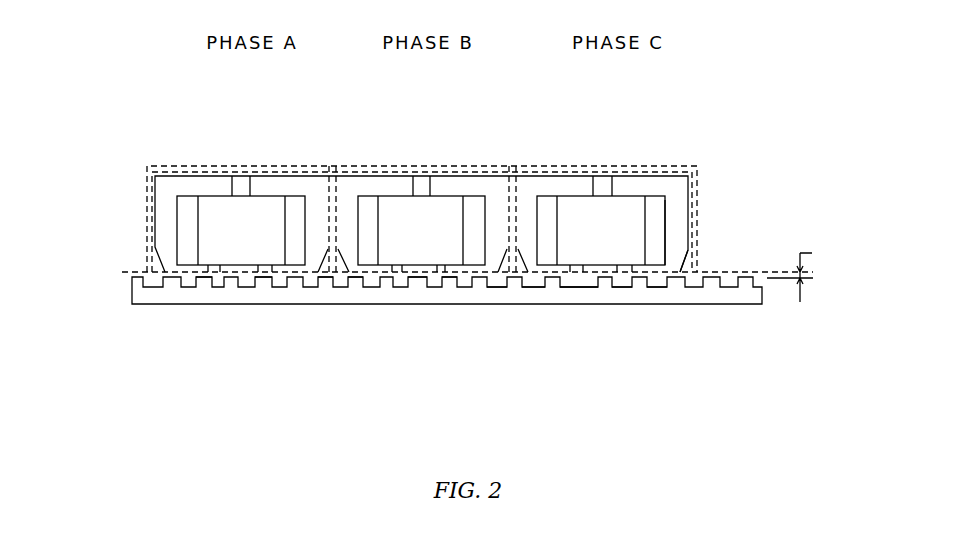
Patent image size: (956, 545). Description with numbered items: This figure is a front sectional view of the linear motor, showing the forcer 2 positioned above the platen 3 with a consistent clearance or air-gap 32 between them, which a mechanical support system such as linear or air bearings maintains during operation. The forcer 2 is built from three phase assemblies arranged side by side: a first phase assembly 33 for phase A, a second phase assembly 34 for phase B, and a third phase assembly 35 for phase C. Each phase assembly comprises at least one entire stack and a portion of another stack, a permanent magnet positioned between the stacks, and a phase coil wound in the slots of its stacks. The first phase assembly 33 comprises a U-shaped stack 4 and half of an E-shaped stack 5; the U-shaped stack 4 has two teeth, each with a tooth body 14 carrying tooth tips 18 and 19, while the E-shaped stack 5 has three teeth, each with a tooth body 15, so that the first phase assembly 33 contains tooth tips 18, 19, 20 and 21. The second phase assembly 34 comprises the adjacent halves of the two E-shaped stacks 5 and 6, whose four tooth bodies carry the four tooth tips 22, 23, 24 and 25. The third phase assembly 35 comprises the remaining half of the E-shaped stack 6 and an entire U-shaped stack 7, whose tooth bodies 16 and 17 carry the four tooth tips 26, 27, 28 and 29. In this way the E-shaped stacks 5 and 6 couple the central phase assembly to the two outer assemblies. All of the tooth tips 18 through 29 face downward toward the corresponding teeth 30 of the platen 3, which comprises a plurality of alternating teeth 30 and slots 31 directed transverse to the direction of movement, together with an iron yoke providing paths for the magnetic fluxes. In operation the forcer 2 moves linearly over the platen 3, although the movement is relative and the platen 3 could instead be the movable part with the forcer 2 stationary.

The forcer 2 is at (563, 168).
The platen 3 is at (753, 297).
The U-shaped stack 4 is at (173, 187).
The E-shaped stack 5 is at (332, 217).
The E-shaped stack 6 is at (510, 218).
The U-shaped stack 7 is at (657, 190).
The tooth body 14 is at (165, 220).
The tooth body 15 is at (337, 215).
The tooth body 16 is at (517, 217).
The tooth body 17 is at (673, 233).
The tooth tip 18 is at (165, 272).
The tooth tip 19 is at (215, 278).
The tooth tip 20 is at (271, 278).
The tooth tip 21 is at (321, 278).
The tooth tip 22 is at (357, 278).
The tooth tip 23 is at (406, 278).
The tooth tip 24 is at (447, 278).
The tooth tip 25 is at (493, 275).
The tooth tip 26 is at (537, 275).
The tooth tip 27 is at (577, 270).
The tooth tip 28 is at (623, 270).
The tooth tip 29 is at (668, 268).
The teeth 30 is at (203, 280).
The slots 31 is at (185, 274).
The air-gap 32 is at (805, 273).
The first phase assembly 33 is at (263, 172).
The second phase assembly 34 is at (448, 173).
The third phase assembly 35 is at (642, 174).